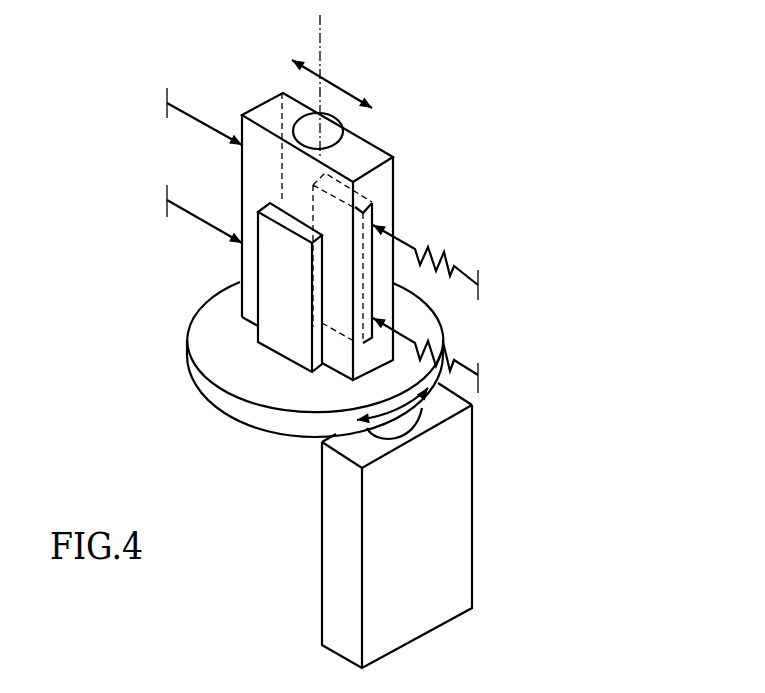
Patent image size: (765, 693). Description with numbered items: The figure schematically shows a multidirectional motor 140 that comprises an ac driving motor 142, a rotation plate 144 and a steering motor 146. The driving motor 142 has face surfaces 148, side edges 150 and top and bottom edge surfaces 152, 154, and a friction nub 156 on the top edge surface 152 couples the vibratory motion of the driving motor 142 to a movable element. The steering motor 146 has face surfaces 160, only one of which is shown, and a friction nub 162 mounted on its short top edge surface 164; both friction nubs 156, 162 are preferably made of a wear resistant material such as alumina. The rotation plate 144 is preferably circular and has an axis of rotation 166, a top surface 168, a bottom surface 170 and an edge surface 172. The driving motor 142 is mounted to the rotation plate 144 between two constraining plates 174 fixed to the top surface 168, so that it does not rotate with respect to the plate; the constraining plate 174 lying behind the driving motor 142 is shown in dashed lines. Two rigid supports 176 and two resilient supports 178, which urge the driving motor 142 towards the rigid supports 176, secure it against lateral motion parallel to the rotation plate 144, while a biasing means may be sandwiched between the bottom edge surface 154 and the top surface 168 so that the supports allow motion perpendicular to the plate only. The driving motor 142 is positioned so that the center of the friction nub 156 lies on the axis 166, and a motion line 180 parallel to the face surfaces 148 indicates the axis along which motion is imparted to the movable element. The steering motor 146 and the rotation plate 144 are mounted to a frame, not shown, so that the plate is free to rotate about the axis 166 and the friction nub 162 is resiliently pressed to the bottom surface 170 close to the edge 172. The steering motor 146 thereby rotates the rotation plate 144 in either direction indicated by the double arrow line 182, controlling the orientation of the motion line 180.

The multidirectional motor 140 is at (533, 112).
The driving motor 142 is at (385, 132).
The rotation plate 144 is at (155, 353).
The steering motor 146 is at (518, 578).
The face surfaces 148 is at (290, 93).
The side edges 150 is at (380, 188).
The top edge surface 152 is at (388, 150).
The bottom edge surface 154 is at (250, 318).
The friction nub 156 is at (340, 117).
The face surfaces 160 is at (438, 510).
The friction nub 162 is at (430, 403).
The short top edge surface 164 is at (357, 448).
The axis of rotation 166 is at (322, 45).
The top surface 168 is at (230, 367).
The bottom surface 170 is at (278, 430).
The edge surface 172 is at (230, 408).
The constraining plates 174 is at (272, 274).
The rigid supports 176 is at (167, 92).
The resilient supports 178 is at (442, 253).
The motion line 180 is at (332, 80).
The double arrow line 182 is at (427, 428).